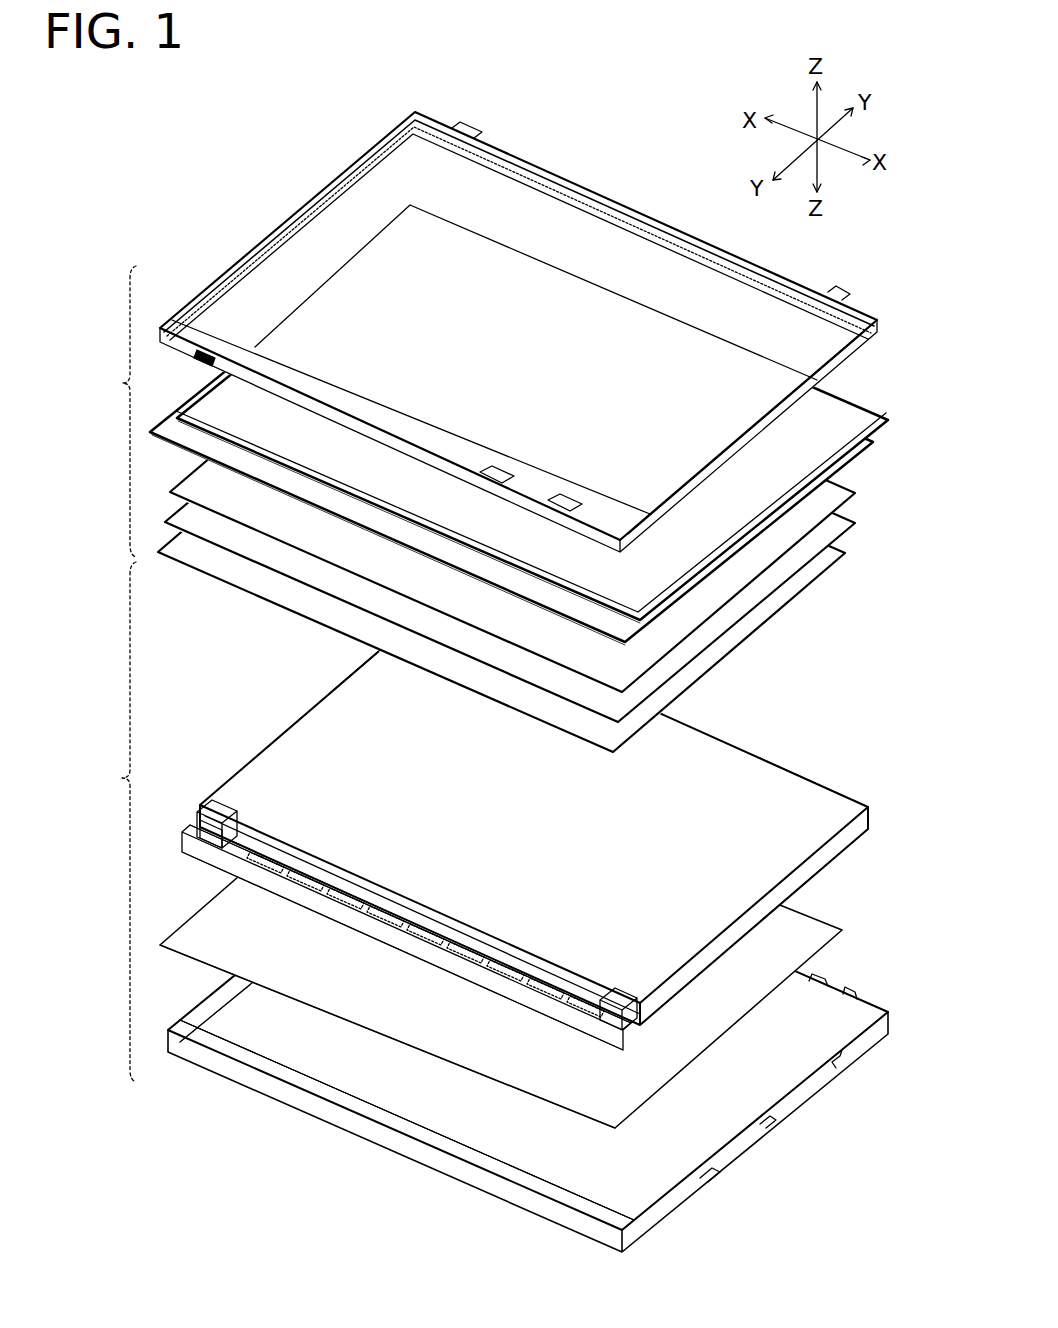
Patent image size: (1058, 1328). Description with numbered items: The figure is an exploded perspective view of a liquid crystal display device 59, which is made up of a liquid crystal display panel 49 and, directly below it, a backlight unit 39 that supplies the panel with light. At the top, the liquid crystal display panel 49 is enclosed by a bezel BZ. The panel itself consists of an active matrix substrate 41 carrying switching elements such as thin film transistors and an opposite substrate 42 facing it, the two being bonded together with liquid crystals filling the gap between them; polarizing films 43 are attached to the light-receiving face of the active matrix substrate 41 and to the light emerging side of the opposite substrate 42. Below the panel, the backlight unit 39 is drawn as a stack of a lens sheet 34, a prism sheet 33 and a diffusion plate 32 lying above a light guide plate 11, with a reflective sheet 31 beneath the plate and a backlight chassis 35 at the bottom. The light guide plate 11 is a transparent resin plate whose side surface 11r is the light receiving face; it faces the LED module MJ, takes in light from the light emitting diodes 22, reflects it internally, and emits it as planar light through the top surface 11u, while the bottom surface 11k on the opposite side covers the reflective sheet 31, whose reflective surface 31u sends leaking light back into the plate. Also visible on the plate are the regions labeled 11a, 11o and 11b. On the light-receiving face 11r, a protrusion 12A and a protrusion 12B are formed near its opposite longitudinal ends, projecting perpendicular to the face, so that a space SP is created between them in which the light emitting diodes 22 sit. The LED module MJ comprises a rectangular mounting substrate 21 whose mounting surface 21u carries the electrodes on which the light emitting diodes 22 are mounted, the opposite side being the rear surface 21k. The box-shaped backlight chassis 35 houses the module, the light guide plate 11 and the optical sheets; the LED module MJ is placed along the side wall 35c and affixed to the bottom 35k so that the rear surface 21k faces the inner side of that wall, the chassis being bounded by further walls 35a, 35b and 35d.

The liquid crystal display device 59 is at (186, 240).
The bezel BZ is at (160, 326).
The liquid crystal display panel 49 is at (116, 411).
The opposite substrate 42 is at (176, 418).
The polarizing films 43 is at (222, 420).
The active matrix substrate 41 is at (152, 432).
The lens sheet 34 is at (214, 503).
The prism sheet 33 is at (214, 535).
The diffusion plate 32 is at (214, 567).
The backlight unit 39 is at (116, 822).
The light guide plate 11 is at (868, 752).
The side end face of light guide plate 11a is at (328, 694).
The end portion of light guide plate 11o is at (806, 788).
The top surface 11u is at (844, 824).
The bottom surface of light guide plate 11b is at (848, 838).
The bottom surface 11k is at (805, 885).
The side surface 11r is at (420, 926).
The protrusion 12A is at (210, 814).
The protrusion 12B is at (638, 1010).
The space SP is at (205, 829).
The LED module MJ is at (205, 882).
The light emitting diodes 22 is at (205, 836).
The mounting substrate 21 is at (226, 876).
The rear surface 21k is at (603, 1037).
The mounting surface 21u is at (650, 1050).
The reflective sheet 31 is at (164, 944).
The reflective surface 31u is at (226, 940).
The backlight chassis 35 is at (168, 1052).
The side wall of chassis 35a is at (192, 1012).
The side wall of chassis 35b is at (776, 1118).
The side wall 35c is at (372, 1130).
The side wall of chassis 35d is at (830, 986).
The bottom 35k is at (256, 1047).